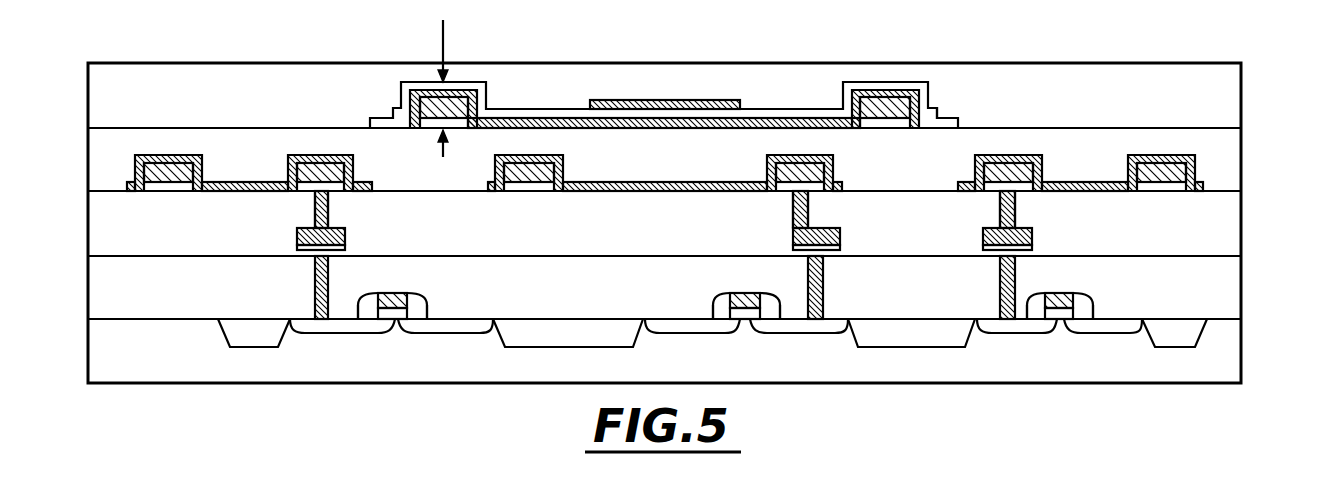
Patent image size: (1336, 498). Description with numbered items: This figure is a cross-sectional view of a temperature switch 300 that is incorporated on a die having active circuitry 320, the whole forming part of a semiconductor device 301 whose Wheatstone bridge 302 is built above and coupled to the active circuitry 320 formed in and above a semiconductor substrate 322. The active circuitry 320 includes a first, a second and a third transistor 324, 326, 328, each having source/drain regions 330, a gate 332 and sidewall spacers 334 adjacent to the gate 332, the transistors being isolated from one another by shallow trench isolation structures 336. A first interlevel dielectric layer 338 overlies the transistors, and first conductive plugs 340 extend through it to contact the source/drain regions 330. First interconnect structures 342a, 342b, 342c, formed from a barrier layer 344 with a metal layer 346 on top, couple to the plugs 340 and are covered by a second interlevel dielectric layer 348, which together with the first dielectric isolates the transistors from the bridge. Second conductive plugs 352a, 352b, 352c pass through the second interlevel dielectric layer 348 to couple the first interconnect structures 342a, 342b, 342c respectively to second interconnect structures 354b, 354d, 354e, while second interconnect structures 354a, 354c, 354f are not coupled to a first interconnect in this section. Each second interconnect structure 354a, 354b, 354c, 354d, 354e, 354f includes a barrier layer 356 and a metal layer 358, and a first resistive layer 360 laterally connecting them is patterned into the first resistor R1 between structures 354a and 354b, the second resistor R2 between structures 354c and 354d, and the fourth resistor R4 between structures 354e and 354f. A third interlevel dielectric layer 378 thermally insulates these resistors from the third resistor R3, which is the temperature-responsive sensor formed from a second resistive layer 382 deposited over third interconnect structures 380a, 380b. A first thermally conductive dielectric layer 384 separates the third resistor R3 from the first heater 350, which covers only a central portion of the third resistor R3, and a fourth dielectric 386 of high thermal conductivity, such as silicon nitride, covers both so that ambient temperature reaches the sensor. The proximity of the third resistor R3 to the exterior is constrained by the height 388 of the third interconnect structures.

The temperature switch 300 is at (1231, 46).
The semiconductor device 301 is at (686, 99).
The Wheatstone bridge 302 is at (715, 165).
The active circuitry 320 is at (770, 319).
The semiconductor substrate 322 is at (1228, 362).
The first transistor 324 is at (420, 292).
The second transistor 326 is at (720, 292).
The third transistor 328 is at (1096, 293).
The source/drain regions 330 is at (437, 328).
The gate 332 is at (390, 293).
The sidewall spacers 334 is at (428, 304).
The shallow trench isolation structures 336 is at (258, 340).
The first interlevel dielectric layer 338 is at (1228, 300).
The first conductive plugs 340 is at (313, 290).
The first interconnect structure 342a is at (340, 218).
The first interconnect structure 342b is at (808, 218).
The first interconnect structure 342c is at (1008, 218).
The barrier layer 344 is at (297, 249).
The metal layer 346 is at (345, 236).
The second interlevel dielectric layer 348 is at (1228, 232).
The first heater 350 is at (663, 100).
The second conductive plug 352a is at (313, 212).
The second conductive plug 352b is at (791, 212).
The second conductive plug 352c is at (998, 212).
The second interconnect structure 354a is at (192, 178).
The second interconnect structure 354b is at (350, 172).
The second interconnect structure 354c is at (563, 172).
The second interconnect structure 354d is at (768, 169).
The second interconnect structure 354e is at (975, 172).
The second interconnect structure 354f is at (1128, 172).
The barrier layer 356 is at (515, 191).
The metal layer 358 is at (503, 173).
The first resistive layer 360 is at (147, 156).
The third interlevel dielectric layer 378 is at (1228, 168).
The third interconnect structure 380a is at (453, 108).
The third interconnect structure 380b is at (856, 106).
The second resistive layer 382 is at (402, 112).
The first thermally conductive dielectric layer 384 is at (892, 88).
The fourth dielectric 386 is at (1228, 97).
The height 388 is at (447, 50).
The first resistor R1 is at (202, 165).
The second resistor R2 is at (563, 160).
The third resistor R3 is at (930, 97).
The fourth resistor R4 is at (975, 160).